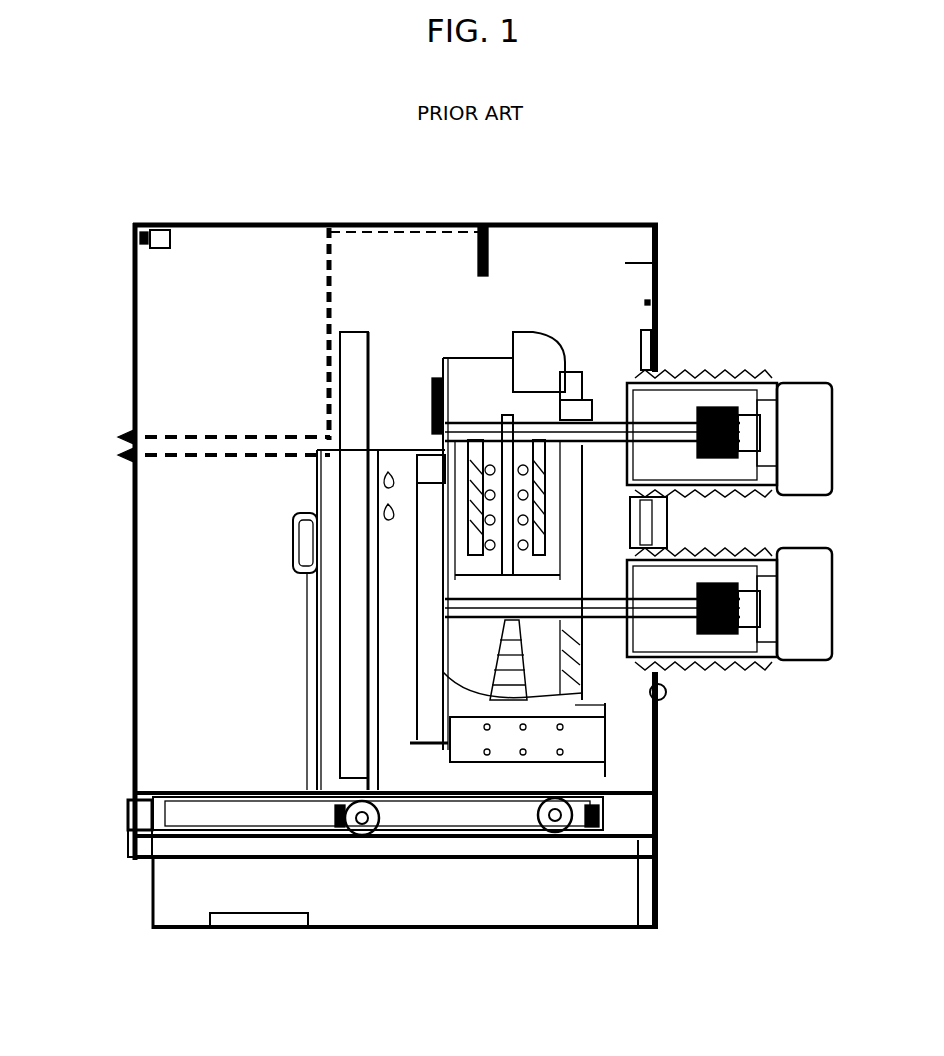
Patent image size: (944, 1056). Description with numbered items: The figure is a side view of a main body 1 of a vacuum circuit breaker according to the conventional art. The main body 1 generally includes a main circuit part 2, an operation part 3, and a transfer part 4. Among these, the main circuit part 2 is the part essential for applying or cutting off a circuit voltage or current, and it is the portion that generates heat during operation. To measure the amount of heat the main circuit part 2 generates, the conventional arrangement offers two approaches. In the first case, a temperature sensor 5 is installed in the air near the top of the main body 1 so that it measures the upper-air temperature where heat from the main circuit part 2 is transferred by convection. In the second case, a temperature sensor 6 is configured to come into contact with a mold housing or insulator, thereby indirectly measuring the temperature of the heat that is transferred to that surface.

The main body 1 is at (658, 243).
The main circuit part 2 is at (667, 520).
The operation part 3 is at (205, 546).
The transfer part 4 is at (612, 877).
The temperature sensor 5 is at (490, 240).
The temperature sensor 6 is at (433, 380).